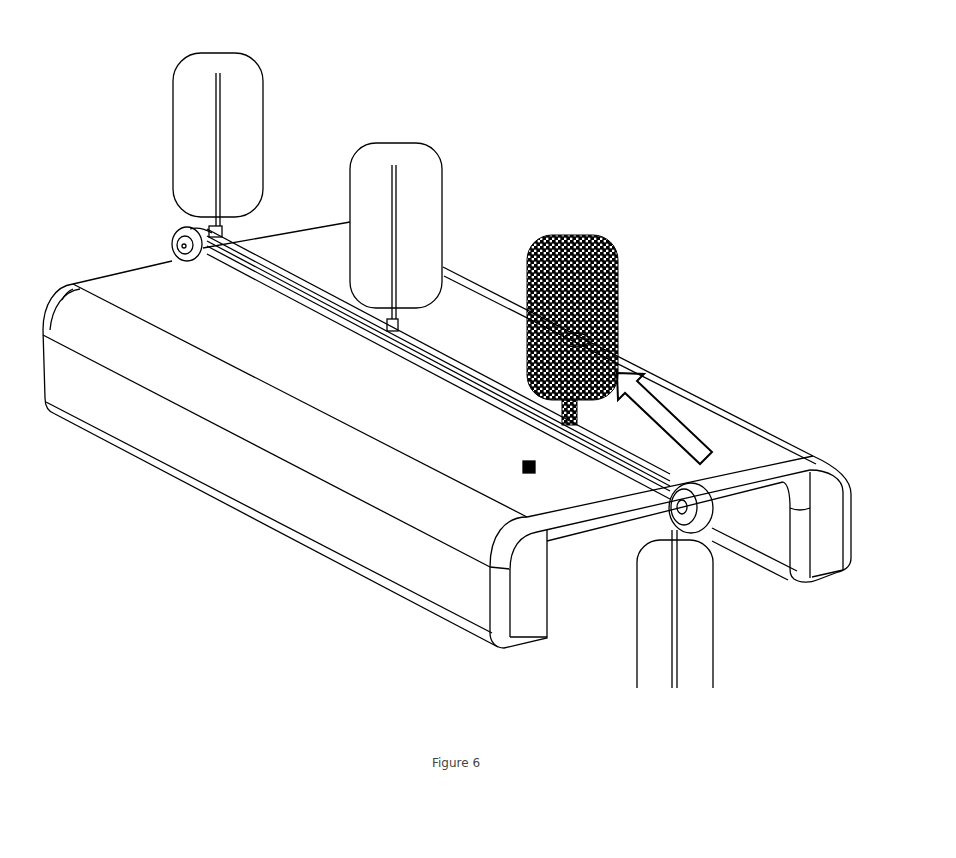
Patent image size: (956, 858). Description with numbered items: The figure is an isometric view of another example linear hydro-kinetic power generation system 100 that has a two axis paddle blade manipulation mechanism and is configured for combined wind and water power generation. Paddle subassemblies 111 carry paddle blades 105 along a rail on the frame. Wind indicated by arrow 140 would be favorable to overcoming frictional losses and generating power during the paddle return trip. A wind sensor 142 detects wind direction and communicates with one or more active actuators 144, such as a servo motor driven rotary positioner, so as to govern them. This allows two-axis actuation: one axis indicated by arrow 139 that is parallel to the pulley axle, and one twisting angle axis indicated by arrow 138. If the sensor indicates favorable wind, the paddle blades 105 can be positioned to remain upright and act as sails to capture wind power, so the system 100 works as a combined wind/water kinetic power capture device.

The linear hydro-kinetic power generation system 100 is at (762, 136).
The paddle blade 105 is at (263, 108).
The paddle subassembly 111 is at (118, 163).
The arrow indicating twisting angle axis 138 is at (578, 333).
The arrow indicating axis parallel to pulley axle 139 is at (675, 517).
The arrow indicating wind 140 is at (689, 418).
The wind sensor 142 is at (513, 467).
The active actuator 144 is at (401, 322).